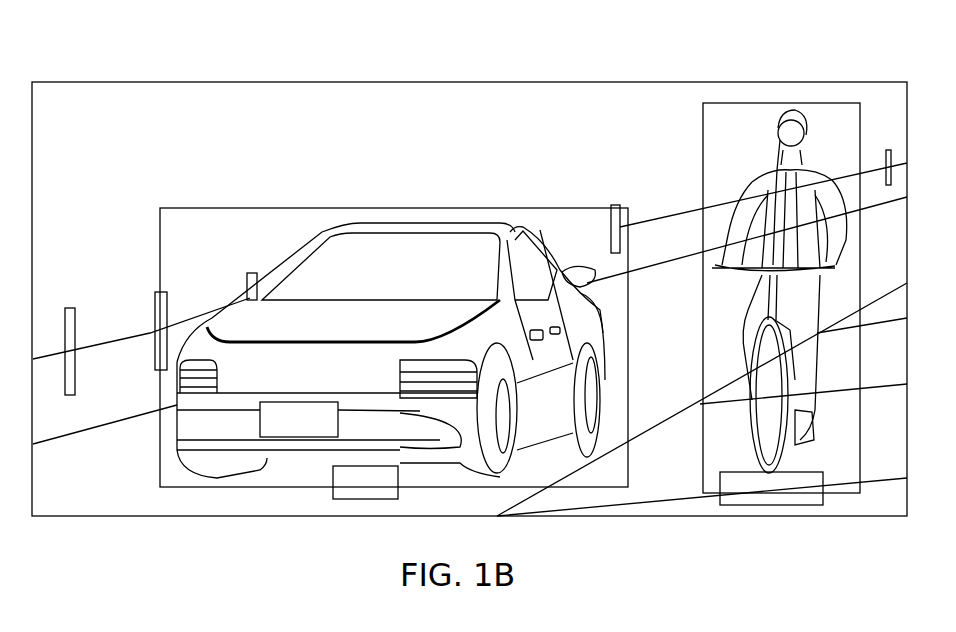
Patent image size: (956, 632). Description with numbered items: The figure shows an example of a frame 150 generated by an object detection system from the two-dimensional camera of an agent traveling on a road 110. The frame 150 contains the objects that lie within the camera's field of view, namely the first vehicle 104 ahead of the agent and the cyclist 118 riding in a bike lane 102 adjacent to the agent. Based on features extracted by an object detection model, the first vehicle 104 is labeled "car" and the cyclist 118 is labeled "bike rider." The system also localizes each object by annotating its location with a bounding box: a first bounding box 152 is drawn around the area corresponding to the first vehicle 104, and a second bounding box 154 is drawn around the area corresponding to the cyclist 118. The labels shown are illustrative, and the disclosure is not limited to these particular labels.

The frame 150 is at (627, 82).
The first bounding box 152 is at (500, 208).
The first vehicle 104 is at (435, 223).
The second bounding box 154 is at (703, 125).
The cyclist 118 is at (752, 185).
The road 110 is at (654, 358).
The bike lane 102 is at (688, 495).